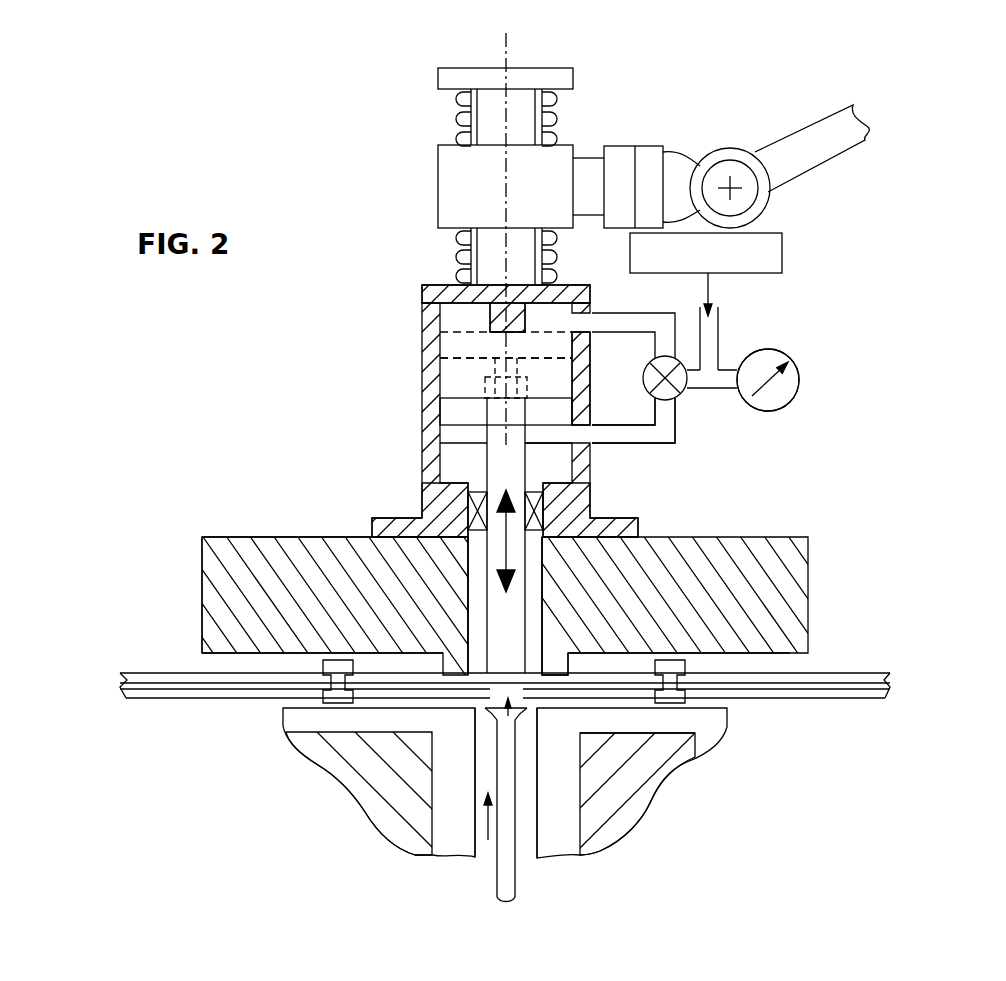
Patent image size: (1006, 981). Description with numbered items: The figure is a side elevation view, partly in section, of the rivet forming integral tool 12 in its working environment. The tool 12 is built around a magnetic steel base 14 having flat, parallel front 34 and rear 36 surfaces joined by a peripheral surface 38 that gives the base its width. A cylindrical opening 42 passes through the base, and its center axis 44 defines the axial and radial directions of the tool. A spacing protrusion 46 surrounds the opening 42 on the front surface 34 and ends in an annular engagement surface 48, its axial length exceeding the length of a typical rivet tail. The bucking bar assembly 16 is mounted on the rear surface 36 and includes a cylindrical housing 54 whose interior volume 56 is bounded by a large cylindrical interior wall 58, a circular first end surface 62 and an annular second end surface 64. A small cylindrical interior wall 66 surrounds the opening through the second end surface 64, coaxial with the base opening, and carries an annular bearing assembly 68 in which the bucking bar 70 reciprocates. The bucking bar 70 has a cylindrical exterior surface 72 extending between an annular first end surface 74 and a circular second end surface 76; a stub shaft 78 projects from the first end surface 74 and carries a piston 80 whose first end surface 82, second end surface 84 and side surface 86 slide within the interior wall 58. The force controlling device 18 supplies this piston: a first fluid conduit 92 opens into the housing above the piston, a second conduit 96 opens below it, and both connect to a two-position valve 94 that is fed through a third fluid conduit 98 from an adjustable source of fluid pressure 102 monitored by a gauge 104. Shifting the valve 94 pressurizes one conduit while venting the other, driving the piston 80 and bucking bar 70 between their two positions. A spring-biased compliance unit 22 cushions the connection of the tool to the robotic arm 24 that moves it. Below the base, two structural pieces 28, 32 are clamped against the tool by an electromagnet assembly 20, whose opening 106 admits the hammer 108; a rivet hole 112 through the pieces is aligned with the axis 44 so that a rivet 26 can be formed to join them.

The rivet forming integral tool 12 is at (851, 290).
The base 14 is at (808, 562).
The bucking bar assembly 16 is at (412, 350).
The force controlling device 18 is at (810, 355).
The electromagnet assembly 20 is at (742, 751).
The compliance unit 22 is at (437, 151).
The robotic arm 24 is at (846, 156).
The rivet 26 is at (480, 705).
The structural piece 28 is at (140, 673).
The structural piece 32 is at (147, 698).
The front surface 34 is at (205, 660).
The rear surface 36 is at (212, 537).
The peripheral surface 38 is at (202, 590).
The opening 42 is at (470, 553).
The center axis 44 is at (508, 48).
The spacing protrusion 46 is at (560, 690).
The engagement surface 48 is at (582, 780).
The housing 54 is at (422, 308).
The interior volume 56 is at (447, 373).
The large cylindrical interior wall 58 is at (446, 452).
The first end surface 62 is at (445, 305).
The second end surface 64 is at (448, 474).
The small cylindrical interior wall 66 is at (546, 557).
The bearing assembly 68 is at (558, 502).
The bucking bar 70 is at (507, 633).
The cylindrical exterior surface 72 is at (466, 606).
The first end surface 74 is at (560, 433).
The second end surface 76 is at (500, 685).
The stub shaft 78 is at (572, 440).
The piston 80 is at (562, 391).
The first end surface 82 is at (543, 395).
The second end surface 84 is at (560, 433).
The side surface 86 is at (440, 403).
The first fluid conduit 92 is at (617, 313).
The valve 94 is at (678, 397).
The second conduit 96 is at (598, 425).
The third fluid conduit 98 is at (718, 343).
The source of fluid pressure 102 is at (782, 253).
The gauge 104 is at (800, 382).
The opening 106 is at (488, 840).
The hammer 108 is at (518, 888).
The rivet hole 112 is at (540, 852).